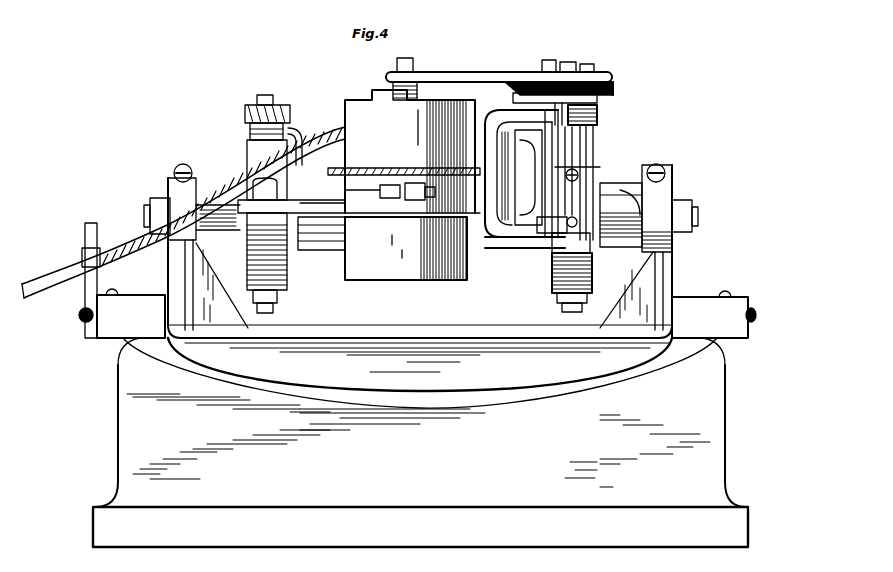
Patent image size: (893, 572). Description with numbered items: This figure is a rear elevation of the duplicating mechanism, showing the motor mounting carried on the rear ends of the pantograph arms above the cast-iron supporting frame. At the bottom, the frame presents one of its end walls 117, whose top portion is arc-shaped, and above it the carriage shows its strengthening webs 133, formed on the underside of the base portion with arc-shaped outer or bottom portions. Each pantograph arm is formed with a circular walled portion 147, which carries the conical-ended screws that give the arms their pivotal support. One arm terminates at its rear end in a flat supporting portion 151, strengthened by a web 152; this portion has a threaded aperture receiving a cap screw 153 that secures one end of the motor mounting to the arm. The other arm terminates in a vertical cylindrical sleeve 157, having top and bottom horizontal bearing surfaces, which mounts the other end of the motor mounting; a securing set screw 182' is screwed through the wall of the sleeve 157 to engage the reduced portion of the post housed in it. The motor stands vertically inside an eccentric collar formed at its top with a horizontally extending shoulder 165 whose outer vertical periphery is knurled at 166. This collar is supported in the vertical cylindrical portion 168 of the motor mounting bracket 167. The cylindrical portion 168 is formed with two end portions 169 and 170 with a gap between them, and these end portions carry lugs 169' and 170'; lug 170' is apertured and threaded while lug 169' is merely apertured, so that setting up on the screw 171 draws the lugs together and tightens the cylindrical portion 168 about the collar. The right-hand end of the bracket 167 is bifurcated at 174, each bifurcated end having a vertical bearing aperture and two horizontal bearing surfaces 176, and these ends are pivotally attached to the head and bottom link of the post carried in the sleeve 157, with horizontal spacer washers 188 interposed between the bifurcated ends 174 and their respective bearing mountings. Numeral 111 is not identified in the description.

The terminal screw 111 is at (614, 78).
The end wall 117 is at (592, 490).
The strengthening web 133 is at (490, 385).
The circular walled portion 147 is at (553, 295).
The flat supporting portion 151 is at (335, 250).
The web 152 is at (288, 280).
The cap screw 153 is at (262, 170).
The vertical cylindrical sleeve 157 is at (600, 152).
The horizontally extending shoulder 165 is at (392, 168).
The knurled periphery 166 is at (369, 176).
The motor mounting bracket 167 is at (378, 170).
The vertical cylindrical portion 168 is at (378, 230).
The end portion 169 is at (374, 247).
The lug 169' is at (413, 176).
The end portion 170 is at (388, 261).
The lug 170' is at (442, 198).
The screw 171 is at (378, 203).
The bifurcated end 174 is at (497, 110).
The horizontal bearing surface 176 is at (597, 135).
The set screw 182' is at (595, 169).
The spacer washer 188 is at (600, 112).